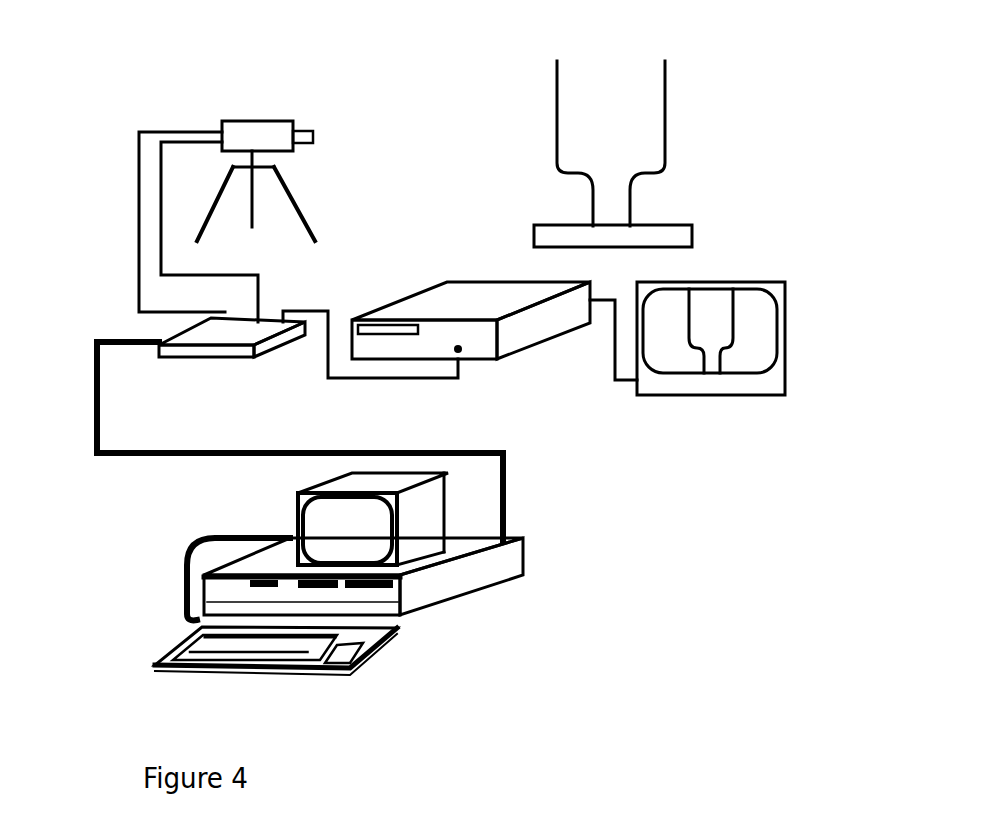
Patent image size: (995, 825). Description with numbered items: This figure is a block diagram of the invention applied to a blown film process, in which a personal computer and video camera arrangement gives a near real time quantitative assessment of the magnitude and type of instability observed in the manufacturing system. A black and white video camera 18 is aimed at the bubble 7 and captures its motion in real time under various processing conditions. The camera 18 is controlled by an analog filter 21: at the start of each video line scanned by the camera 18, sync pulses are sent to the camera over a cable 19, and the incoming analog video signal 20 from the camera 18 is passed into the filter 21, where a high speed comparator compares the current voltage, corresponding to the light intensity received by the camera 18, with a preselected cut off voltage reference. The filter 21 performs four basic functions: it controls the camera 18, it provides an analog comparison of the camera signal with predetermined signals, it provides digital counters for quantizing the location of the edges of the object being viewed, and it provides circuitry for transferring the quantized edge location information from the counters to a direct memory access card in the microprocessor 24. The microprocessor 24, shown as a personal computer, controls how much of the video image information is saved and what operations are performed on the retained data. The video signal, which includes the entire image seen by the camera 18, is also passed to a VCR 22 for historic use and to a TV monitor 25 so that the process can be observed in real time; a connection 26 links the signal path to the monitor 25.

The bubble 7 is at (668, 106).
The black and white video camera 18 is at (293, 148).
The cable 19 is at (139, 303).
The analog video signal 20 is at (258, 275).
The analog filter 21 is at (230, 358).
The VCR 22 is at (458, 353).
The microprocessor 24 is at (525, 562).
The TV monitor 25 is at (778, 280).
The connection line 26 is at (623, 382).